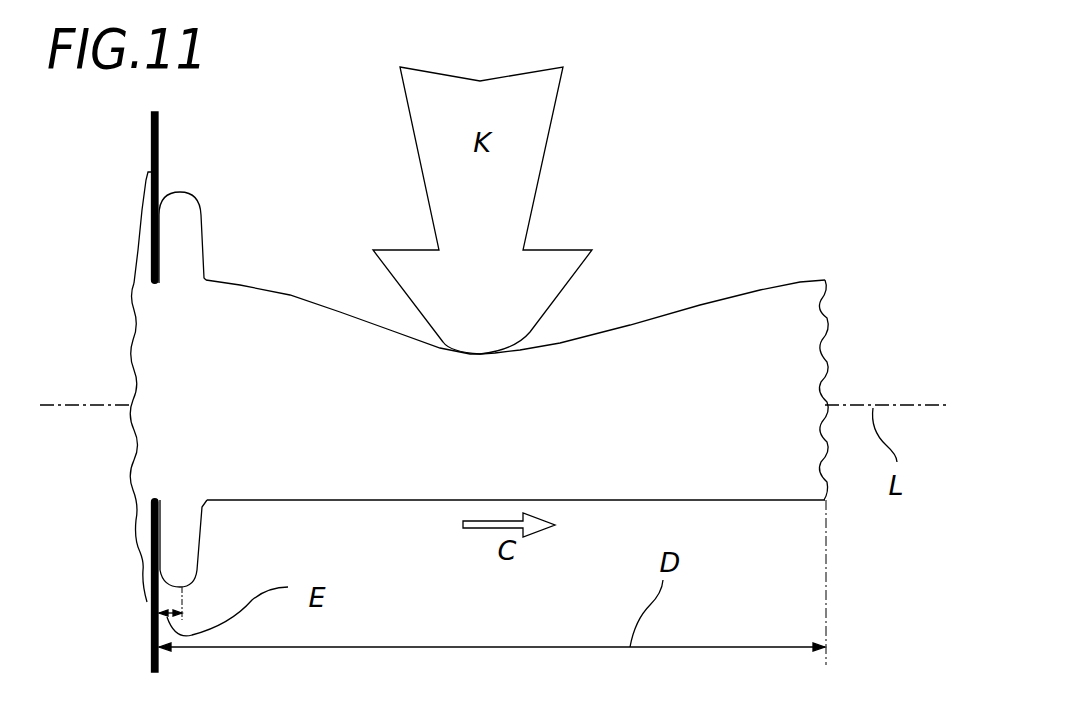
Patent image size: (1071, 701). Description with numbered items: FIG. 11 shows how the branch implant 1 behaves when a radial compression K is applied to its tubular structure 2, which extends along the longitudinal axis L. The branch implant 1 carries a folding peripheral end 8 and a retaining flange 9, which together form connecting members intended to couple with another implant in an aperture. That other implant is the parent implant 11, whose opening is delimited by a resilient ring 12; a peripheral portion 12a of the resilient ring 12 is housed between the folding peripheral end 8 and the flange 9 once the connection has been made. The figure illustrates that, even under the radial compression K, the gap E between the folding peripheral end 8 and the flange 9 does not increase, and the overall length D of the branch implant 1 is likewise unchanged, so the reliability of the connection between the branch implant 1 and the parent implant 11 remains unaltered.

The branch implant 1 is at (786, 245).
The tubular structure 2 is at (477, 443).
The folding peripheral end 8 is at (140, 202).
The retaining flange 9 is at (180, 193).
The parent implant 11 is at (151, 379).
The resilient ring 12 is at (157, 152).
The peripheral portion 12a is at (142, 258).